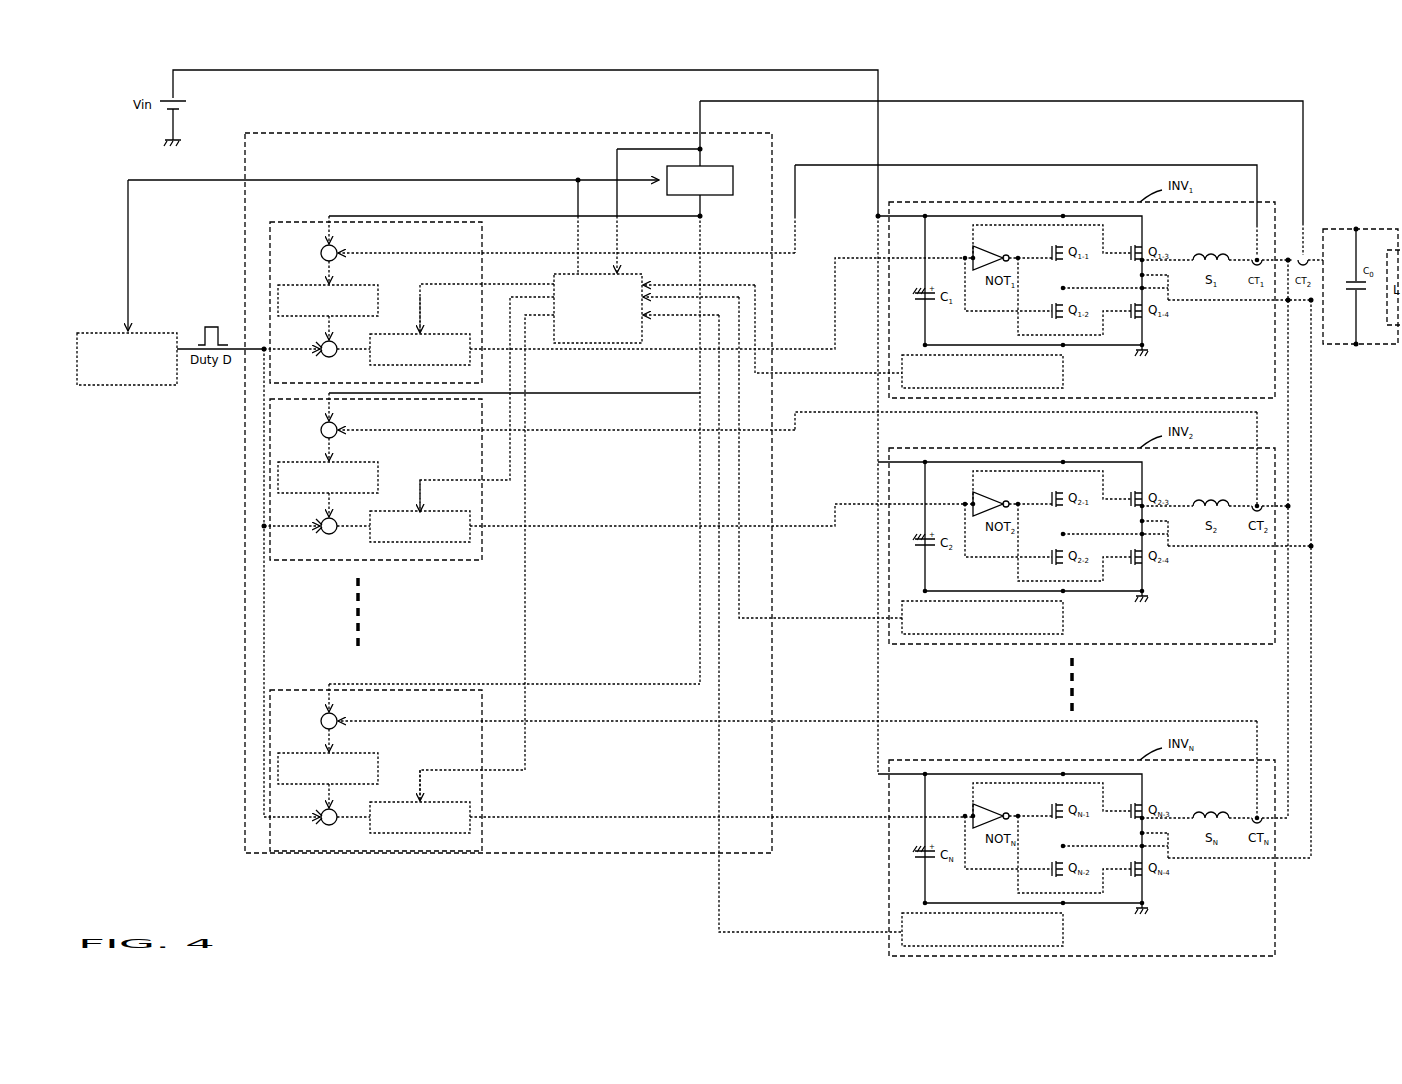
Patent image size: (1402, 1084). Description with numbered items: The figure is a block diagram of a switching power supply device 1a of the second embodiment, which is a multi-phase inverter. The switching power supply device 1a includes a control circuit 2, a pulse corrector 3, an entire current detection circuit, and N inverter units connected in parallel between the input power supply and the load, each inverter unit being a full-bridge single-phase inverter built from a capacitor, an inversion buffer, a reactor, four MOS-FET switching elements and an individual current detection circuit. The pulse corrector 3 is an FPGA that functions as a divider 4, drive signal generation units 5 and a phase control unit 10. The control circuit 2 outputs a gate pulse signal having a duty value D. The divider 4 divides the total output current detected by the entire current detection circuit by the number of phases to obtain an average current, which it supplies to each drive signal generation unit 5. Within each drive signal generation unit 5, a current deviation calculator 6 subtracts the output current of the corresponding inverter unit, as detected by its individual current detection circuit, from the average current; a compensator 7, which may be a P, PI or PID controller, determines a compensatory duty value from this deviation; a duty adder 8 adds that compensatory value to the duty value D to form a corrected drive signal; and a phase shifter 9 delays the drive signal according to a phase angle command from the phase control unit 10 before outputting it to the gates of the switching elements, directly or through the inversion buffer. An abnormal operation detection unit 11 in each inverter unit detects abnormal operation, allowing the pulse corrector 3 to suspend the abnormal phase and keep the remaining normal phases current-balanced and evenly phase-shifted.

The switching power supply device 1a is at (1192, 90).
The control circuit 2 is at (160, 335).
The pulse corrector 3 is at (628, 133).
The divider 4 is at (716, 166).
The drive signal generation unit 5 is at (276, 222).
The current deviation calculator 6 is at (339, 250).
The compensator 7 is at (366, 285).
The duty adder 8 is at (336, 356).
The phase shifter 9 is at (435, 334).
The phase control unit 10 is at (638, 273).
The abnormal operation detection unit 11 is at (1063, 367).